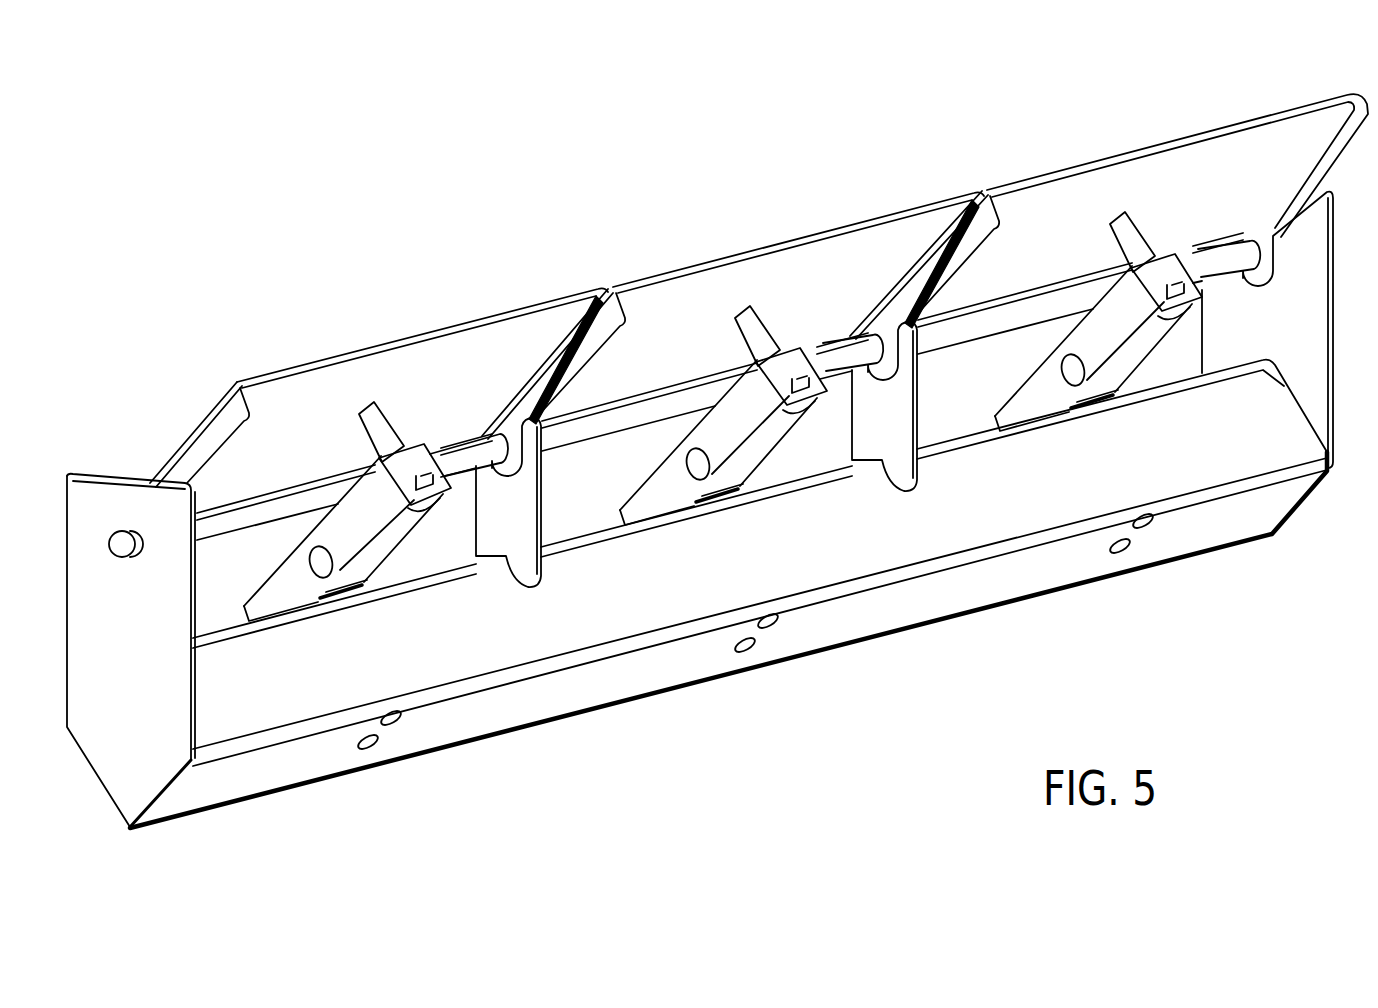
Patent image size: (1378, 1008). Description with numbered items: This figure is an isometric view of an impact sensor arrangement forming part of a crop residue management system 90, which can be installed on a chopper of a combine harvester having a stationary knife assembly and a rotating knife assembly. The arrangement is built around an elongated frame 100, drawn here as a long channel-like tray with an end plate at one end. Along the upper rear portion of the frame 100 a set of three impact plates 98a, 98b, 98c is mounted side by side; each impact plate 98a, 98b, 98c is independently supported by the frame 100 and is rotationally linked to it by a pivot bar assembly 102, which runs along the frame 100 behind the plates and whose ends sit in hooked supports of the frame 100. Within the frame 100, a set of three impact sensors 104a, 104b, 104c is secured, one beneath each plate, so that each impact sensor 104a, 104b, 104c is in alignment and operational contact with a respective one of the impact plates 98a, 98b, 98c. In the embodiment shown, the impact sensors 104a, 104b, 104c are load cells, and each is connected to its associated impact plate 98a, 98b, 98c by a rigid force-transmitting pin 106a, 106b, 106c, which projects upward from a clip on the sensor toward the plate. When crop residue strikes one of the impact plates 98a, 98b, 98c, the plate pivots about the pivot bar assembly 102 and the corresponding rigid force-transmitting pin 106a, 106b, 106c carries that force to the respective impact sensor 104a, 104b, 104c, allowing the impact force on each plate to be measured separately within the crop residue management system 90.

The crop residue management system 90 is at (942, 672).
The impact plate 98a is at (301, 366).
The impact plate 98b is at (678, 266).
The impact plate 98c is at (1055, 170).
The frame 100 is at (790, 645).
The pivot bar assembly 102 is at (945, 340).
The impact sensor 104a is at (397, 542).
The impact sensor 104b is at (773, 440).
The impact sensor 104c is at (1147, 345).
The rigid force-transmitting pin 106a is at (376, 426).
The rigid force-transmitting pin 106b is at (753, 330).
The rigid force-transmitting pin 106c is at (1130, 235).